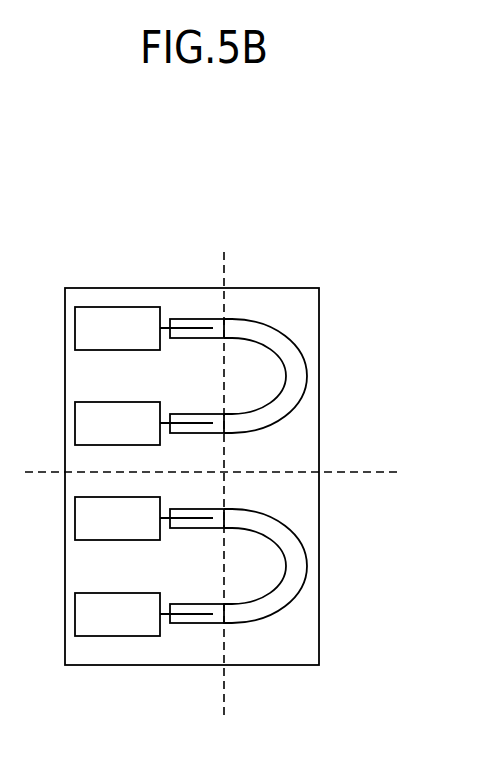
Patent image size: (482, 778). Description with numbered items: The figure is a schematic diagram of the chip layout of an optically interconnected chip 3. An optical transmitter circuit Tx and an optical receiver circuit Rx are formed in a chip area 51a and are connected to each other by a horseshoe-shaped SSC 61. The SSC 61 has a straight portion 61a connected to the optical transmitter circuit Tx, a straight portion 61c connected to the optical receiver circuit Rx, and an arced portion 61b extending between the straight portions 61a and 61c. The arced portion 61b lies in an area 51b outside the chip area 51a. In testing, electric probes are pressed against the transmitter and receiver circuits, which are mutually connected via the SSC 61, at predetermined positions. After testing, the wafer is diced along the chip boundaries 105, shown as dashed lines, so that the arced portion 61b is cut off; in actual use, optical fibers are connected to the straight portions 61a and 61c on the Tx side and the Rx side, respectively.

The optically interconnected chip 3 is at (320, 240).
The chip area 51a is at (146, 298).
The area outside the chip area 51b is at (304, 431).
The horseshoe-shaped SSC 61 is at (304, 455).
The straight portion 61a is at (203, 326).
The arced portion 61b is at (294, 378).
The straight portion 61c is at (274, 518).
The chip boundary 105 is at (352, 474).